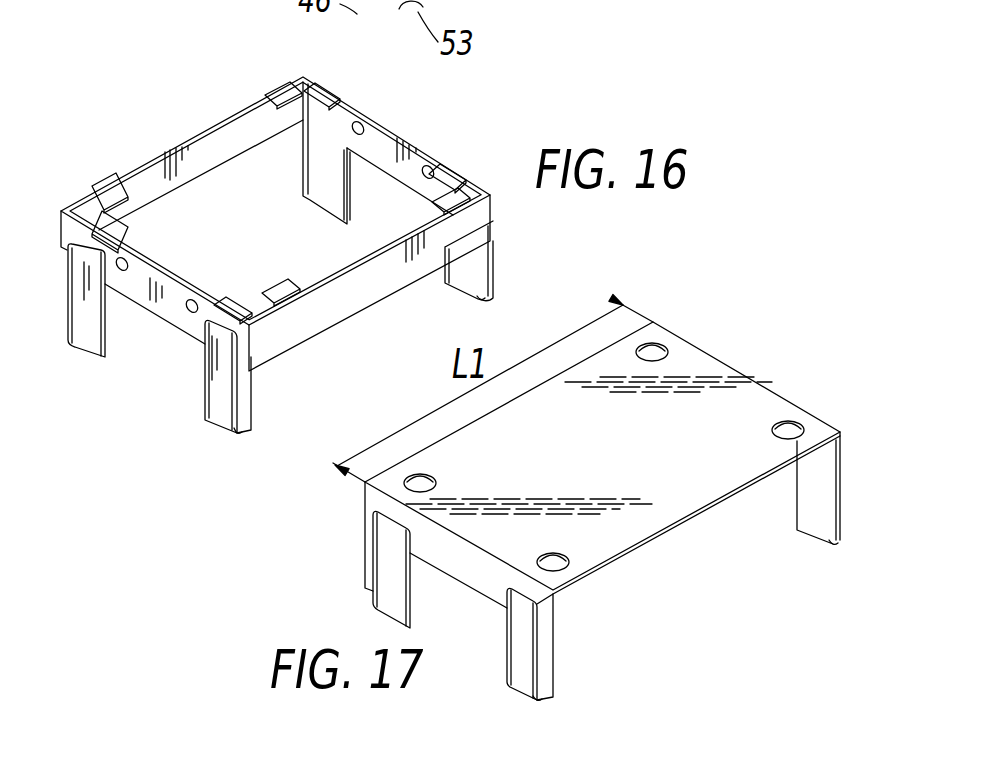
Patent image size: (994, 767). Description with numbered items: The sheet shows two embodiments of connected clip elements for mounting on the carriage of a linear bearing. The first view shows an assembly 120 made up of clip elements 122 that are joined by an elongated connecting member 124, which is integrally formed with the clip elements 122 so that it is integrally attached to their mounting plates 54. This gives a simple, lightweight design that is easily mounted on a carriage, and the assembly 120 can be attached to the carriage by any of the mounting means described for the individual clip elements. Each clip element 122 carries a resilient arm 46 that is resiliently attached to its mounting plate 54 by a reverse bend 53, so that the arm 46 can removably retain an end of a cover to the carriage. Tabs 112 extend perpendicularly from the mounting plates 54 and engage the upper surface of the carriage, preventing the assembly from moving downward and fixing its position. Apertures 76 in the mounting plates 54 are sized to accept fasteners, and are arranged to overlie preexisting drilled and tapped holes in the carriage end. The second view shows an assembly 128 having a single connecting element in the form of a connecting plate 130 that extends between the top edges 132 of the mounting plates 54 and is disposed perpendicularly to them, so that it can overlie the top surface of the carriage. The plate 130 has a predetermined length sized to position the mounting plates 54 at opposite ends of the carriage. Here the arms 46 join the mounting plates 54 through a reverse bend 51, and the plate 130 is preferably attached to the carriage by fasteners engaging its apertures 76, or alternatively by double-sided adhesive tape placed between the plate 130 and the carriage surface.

In FIG. 16, the assembly 120 is at (176, 117).
In FIG. 16, the mounting plate 54 is at (338, 113).
In FIG. 17, the mounting plate 54 is at (812, 510).
In FIG. 16, the clip element 122 is at (444, 130).
In FIG. 16, the elongated connecting member 124 is at (352, 290).
In FIG. 16, the aperture 76 is at (126, 260).
In FIG. 17, the aperture 76 is at (668, 343).
In FIG. 16, the tab 112 is at (240, 292).
In FIG. 16, the resilient arm 46 is at (220, 412).
In FIG. 17, the resilient arm 46 is at (520, 672).
In FIG. 16, the reverse bend 53 is at (238, 434).
In FIG. 17, the assembly 128 is at (755, 337).
In FIG. 17, the connecting plate 130 is at (755, 405).
In FIG. 17, the top edge 132 is at (803, 412).
In FIG. 17, the reverse bend 51 is at (833, 546).